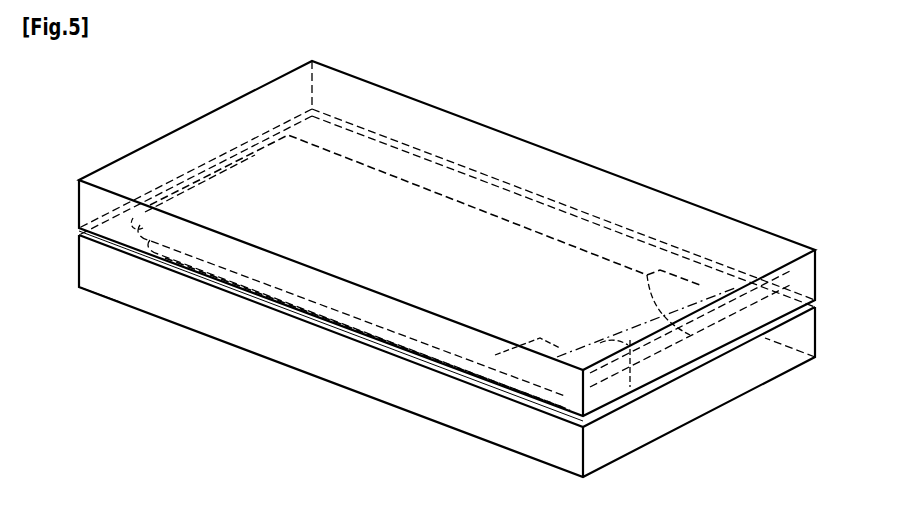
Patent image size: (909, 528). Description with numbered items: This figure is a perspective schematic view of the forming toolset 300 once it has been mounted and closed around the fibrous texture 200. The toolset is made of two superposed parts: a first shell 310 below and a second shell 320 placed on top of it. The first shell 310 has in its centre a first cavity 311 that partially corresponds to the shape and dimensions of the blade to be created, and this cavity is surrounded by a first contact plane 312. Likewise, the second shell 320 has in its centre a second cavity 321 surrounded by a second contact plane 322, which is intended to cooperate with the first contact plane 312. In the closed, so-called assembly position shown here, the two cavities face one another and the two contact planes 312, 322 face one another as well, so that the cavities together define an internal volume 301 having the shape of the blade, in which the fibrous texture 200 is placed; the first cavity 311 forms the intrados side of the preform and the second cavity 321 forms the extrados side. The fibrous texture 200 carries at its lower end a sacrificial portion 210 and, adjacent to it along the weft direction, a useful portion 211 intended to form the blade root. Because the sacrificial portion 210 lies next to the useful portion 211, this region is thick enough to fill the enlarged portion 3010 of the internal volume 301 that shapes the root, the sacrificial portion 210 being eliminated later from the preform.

The fibrous texture 200 is at (458, 205).
The sacrificial portion 210 is at (627, 345).
The useful portion 211 is at (513, 350).
The forming toolset 300 is at (870, 219).
The internal volume 301 is at (175, 265).
The first shell 310 is at (818, 313).
The first cavity 311 is at (230, 272).
The first contact plane 312 is at (112, 246).
The second shell 320 is at (623, 202).
The second cavity 321 is at (133, 218).
The second contact plane 322 is at (84, 280).
The enlarged portion 3010 is at (555, 375).